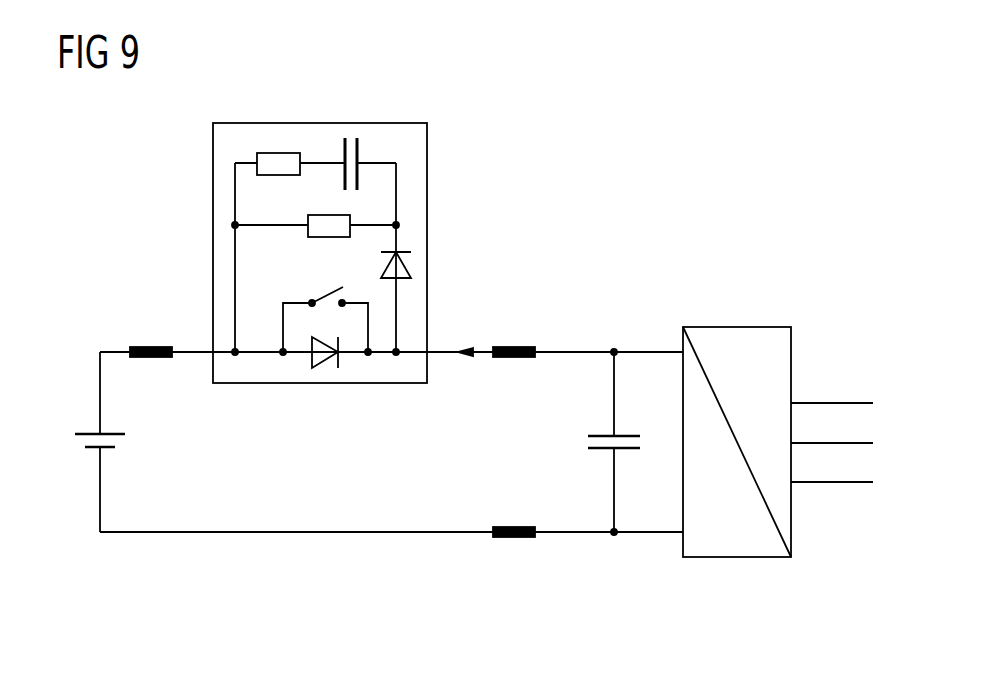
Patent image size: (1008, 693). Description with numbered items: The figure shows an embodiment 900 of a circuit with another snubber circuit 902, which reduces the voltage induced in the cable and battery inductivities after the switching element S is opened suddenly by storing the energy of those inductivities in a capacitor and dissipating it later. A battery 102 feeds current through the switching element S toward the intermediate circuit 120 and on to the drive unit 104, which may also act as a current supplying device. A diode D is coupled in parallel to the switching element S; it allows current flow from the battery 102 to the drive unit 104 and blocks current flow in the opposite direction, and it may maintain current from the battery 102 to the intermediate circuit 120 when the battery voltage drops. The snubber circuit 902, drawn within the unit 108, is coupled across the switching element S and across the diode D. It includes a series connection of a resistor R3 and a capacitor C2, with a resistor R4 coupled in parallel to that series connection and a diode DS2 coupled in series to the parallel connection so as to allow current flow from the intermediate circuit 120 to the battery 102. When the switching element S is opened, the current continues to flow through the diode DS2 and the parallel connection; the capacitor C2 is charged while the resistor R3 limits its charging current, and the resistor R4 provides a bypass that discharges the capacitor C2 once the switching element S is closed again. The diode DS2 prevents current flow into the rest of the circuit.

The embodiment of a circuit 900 is at (372, 571).
The snubber circuit 902 is at (311, 256).
The battery 102 is at (92, 462).
The drive unit 104 is at (878, 585).
The protection circuit housing / unit 108 is at (427, 150).
The intermediate circuit 120 is at (603, 460).
The resistor R3 is at (277, 150).
The resistor R4 is at (307, 218).
The capacitor C2 is at (350, 132).
The diode DS2 is at (412, 263).
The switching element S is at (322, 285).
The diode D is at (332, 370).